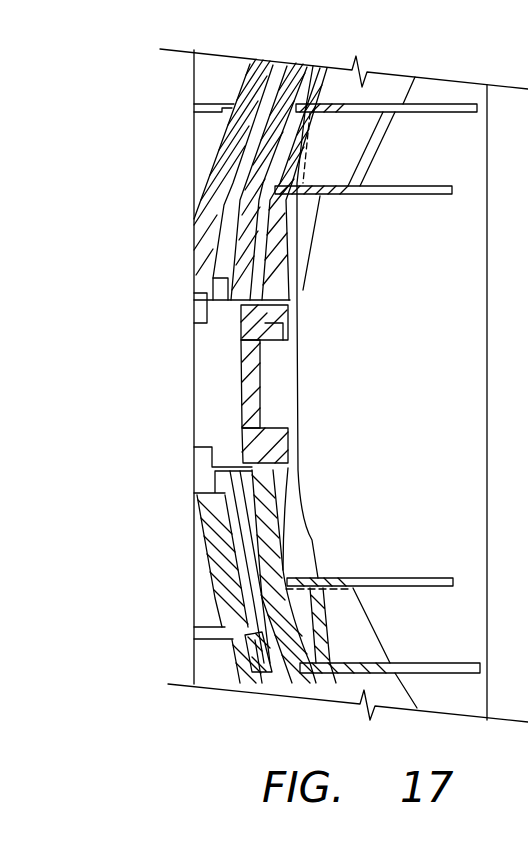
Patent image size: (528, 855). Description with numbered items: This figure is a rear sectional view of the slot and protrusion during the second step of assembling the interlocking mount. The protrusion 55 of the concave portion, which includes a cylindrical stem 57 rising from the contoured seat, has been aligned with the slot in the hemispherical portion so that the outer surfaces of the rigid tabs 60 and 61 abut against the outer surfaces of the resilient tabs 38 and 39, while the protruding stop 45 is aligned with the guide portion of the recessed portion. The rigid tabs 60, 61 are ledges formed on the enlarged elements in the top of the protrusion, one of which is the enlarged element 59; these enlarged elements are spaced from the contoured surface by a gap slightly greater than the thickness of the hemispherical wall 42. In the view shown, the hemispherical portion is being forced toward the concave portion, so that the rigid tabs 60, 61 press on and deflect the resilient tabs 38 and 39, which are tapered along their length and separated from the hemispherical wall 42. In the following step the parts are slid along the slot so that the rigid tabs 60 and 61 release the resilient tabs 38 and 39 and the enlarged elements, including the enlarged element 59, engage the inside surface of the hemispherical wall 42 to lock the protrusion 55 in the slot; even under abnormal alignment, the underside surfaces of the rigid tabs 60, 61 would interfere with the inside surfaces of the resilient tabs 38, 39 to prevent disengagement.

The hemispherical wall 42 is at (303, 82).
The resilient tab 38 is at (282, 266).
The protruding stop 45 is at (205, 291).
The rigid tab 60 is at (295, 308).
The protrusion 55 is at (313, 356).
The enlarged element 59 is at (247, 377).
The cylindrical stem 57 is at (222, 387).
The rigid tab 61 is at (253, 458).
The resilient tab 39 is at (277, 487).